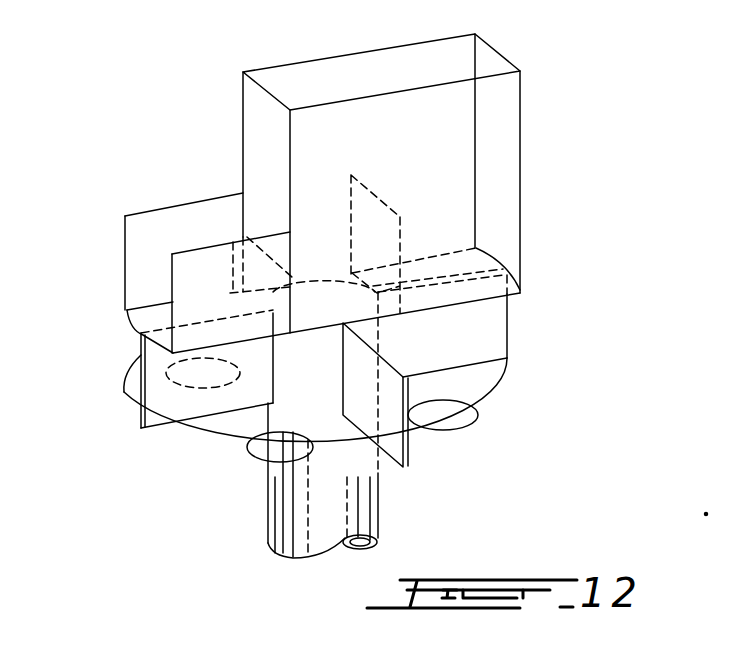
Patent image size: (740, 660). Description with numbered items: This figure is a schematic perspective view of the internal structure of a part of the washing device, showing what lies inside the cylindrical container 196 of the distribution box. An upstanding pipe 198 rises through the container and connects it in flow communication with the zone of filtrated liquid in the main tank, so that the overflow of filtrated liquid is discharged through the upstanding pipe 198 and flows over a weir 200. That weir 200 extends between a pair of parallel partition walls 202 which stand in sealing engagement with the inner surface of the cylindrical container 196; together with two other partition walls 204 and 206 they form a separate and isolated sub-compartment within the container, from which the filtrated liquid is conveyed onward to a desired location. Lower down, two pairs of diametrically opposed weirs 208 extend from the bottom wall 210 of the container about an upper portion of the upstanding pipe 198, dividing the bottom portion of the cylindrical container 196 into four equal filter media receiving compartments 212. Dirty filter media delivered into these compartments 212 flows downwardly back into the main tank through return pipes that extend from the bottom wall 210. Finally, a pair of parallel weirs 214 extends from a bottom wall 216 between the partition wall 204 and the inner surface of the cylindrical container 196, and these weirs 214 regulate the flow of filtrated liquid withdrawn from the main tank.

The cylindrical container 196 is at (513, 415).
The upstanding pipe 198 is at (335, 515).
The weir 200 is at (380, 203).
The partition walls 202 is at (520, 90).
The partition wall 204 is at (257, 123).
The partition wall 206 is at (483, 255).
The weirs 208 is at (483, 326).
The bottom wall 210 is at (490, 378).
The filter media receiving compartments 212 is at (428, 443).
The weirs 214 is at (187, 275).
The bottom wall 216 is at (150, 323).